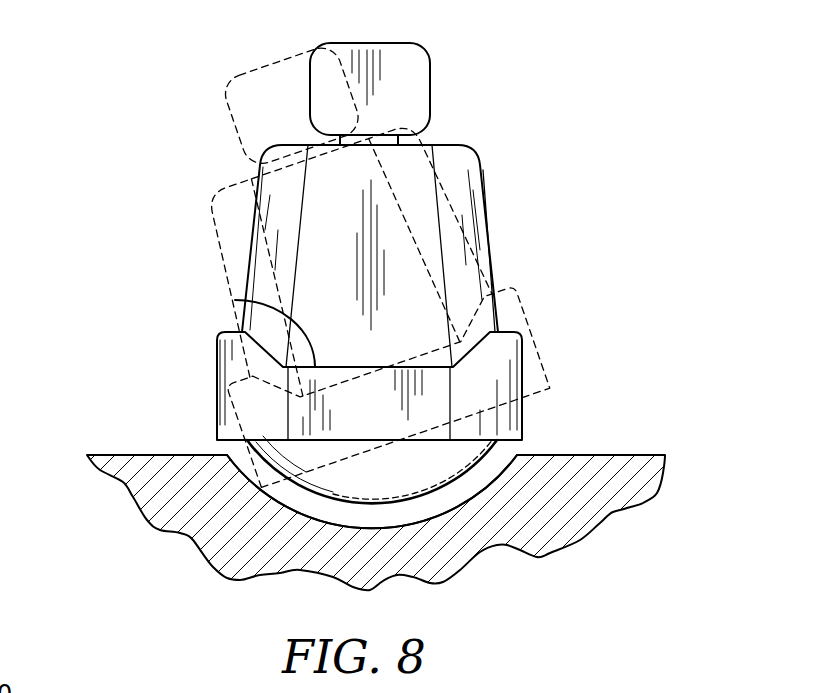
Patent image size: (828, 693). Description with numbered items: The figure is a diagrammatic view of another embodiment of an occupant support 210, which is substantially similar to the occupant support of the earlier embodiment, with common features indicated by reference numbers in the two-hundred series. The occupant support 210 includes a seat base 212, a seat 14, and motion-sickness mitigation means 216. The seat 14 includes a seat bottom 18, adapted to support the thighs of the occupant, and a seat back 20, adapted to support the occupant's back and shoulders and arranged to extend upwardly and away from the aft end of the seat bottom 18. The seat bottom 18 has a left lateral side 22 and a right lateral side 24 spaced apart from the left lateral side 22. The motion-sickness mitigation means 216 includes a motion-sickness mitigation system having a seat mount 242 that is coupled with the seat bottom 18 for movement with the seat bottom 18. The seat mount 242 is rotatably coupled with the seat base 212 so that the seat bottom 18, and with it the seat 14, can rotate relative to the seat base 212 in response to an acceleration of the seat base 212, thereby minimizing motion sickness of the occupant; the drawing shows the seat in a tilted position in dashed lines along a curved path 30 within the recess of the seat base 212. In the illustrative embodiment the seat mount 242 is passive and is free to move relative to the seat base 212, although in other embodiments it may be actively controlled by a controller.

The occupant support 210 is at (140, 99).
The seat 14 is at (520, 247).
The seat back 20 is at (501, 186).
The pivot path arc 30 is at (235, 300).
The right lateral side 24 is at (205, 362).
The seat bottom 18 is at (539, 400).
The left lateral side 22 is at (539, 423).
The seat base 212 is at (148, 443).
The seat mount 242 is at (309, 514).
The motion-sickness mitigation means 216 is at (468, 488).